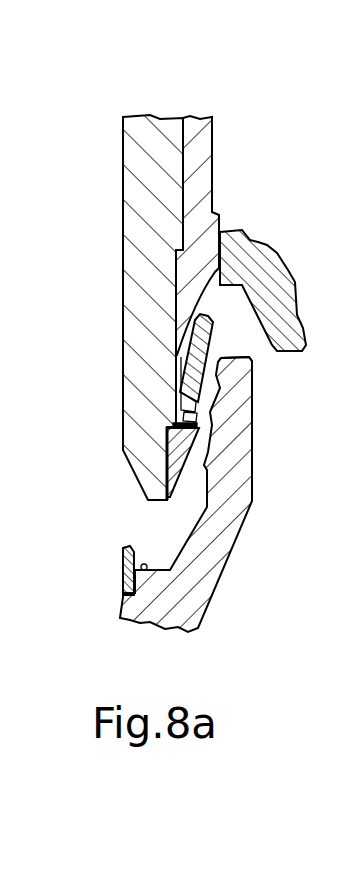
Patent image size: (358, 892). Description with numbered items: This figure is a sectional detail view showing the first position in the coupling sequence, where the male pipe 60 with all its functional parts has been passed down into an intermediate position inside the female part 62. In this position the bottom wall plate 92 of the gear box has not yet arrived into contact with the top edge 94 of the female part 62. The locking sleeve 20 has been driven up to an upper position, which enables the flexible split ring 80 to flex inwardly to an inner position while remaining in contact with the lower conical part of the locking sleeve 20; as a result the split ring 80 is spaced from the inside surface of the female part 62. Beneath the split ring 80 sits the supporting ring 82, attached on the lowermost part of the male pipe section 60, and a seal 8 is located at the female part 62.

The male pipe 60 is at (147, 152).
The locking sleeve 20 is at (200, 140).
The bottom wall plate 92 is at (253, 242).
The split ring 80 is at (196, 347).
The supporting ring 82 is at (167, 445).
The female part 62 is at (118, 615).
The seal ring 8 is at (123, 567).
The top edge 94 is at (250, 356).